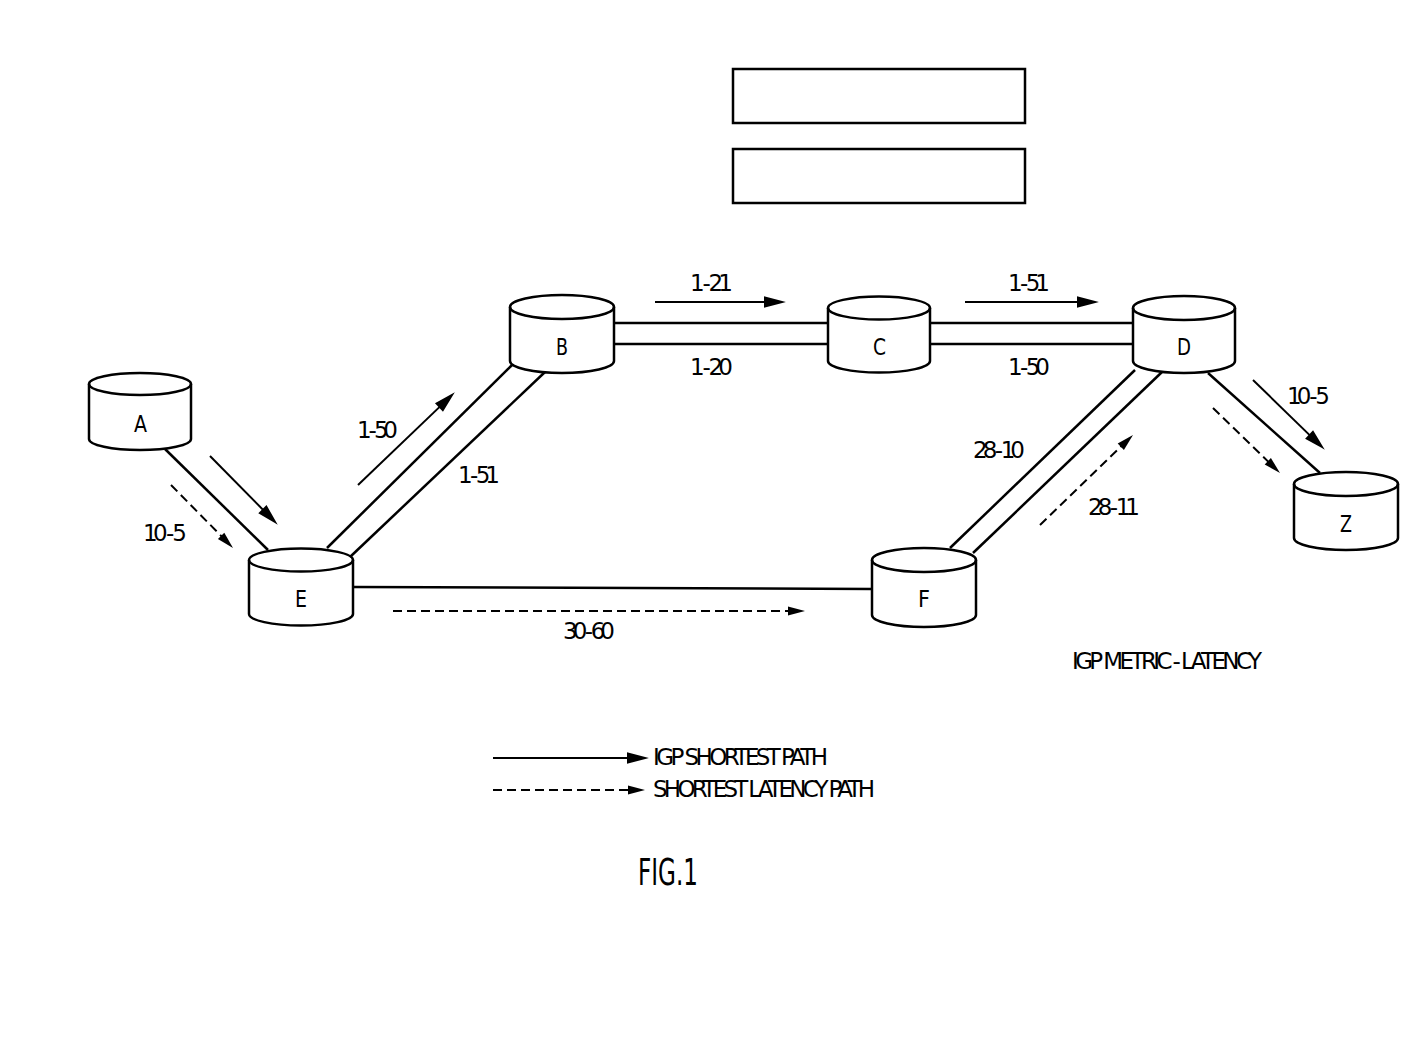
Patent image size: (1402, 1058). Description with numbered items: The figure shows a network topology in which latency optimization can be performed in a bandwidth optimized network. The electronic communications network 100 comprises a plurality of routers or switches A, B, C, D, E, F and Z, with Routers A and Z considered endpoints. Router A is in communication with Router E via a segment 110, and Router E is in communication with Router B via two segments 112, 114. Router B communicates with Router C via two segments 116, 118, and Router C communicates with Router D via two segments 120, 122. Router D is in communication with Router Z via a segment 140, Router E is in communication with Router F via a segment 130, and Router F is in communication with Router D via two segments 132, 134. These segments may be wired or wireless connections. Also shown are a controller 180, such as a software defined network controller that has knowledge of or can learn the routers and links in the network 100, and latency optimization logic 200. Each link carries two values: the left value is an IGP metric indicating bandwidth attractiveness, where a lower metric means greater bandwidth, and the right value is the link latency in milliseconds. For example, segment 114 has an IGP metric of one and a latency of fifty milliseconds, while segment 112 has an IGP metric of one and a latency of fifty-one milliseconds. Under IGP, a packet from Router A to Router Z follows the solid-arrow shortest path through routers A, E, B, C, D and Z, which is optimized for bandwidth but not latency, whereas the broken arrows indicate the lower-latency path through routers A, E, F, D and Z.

The electronic communications network 100 is at (1183, 169).
The controller 180 is at (1025, 97).
The latency optimization logic 200 is at (1025, 178).
The segment 110 is at (190, 470).
The segment 112 is at (381, 531).
The segment 114 is at (353, 523).
The segment 116 is at (646, 345).
The segment 118 is at (640, 323).
The segment 120 is at (962, 345).
The segment 122 is at (956, 323).
The segment 130 is at (497, 587).
The segment 132 is at (1003, 532).
The segment 134 is at (972, 528).
The segment 140 is at (1234, 395).